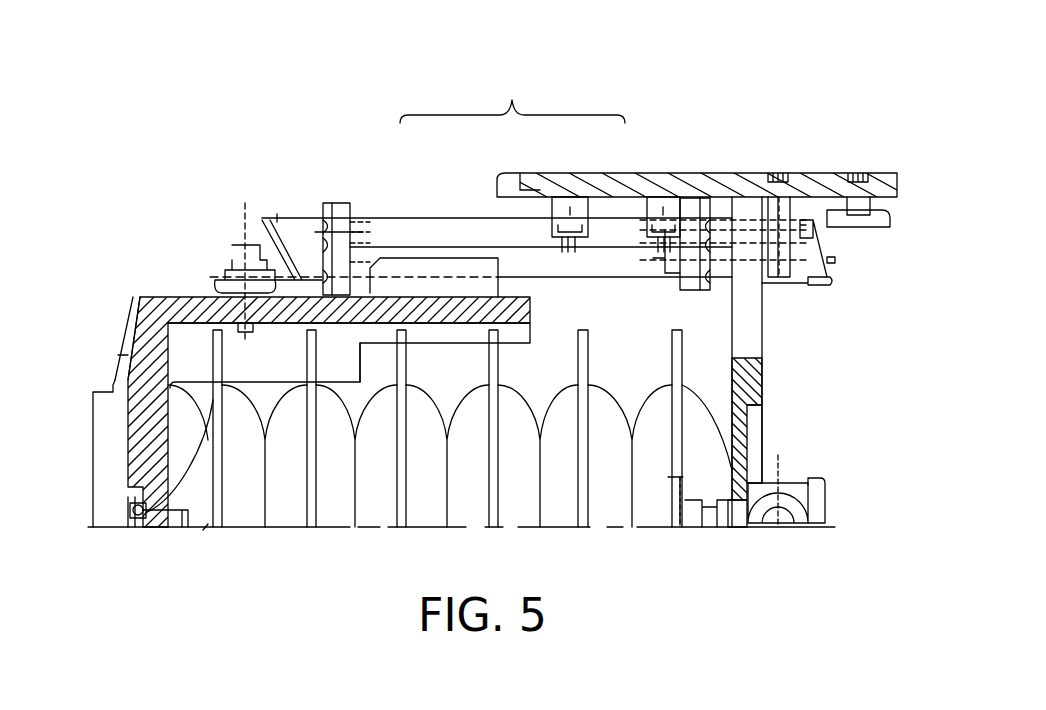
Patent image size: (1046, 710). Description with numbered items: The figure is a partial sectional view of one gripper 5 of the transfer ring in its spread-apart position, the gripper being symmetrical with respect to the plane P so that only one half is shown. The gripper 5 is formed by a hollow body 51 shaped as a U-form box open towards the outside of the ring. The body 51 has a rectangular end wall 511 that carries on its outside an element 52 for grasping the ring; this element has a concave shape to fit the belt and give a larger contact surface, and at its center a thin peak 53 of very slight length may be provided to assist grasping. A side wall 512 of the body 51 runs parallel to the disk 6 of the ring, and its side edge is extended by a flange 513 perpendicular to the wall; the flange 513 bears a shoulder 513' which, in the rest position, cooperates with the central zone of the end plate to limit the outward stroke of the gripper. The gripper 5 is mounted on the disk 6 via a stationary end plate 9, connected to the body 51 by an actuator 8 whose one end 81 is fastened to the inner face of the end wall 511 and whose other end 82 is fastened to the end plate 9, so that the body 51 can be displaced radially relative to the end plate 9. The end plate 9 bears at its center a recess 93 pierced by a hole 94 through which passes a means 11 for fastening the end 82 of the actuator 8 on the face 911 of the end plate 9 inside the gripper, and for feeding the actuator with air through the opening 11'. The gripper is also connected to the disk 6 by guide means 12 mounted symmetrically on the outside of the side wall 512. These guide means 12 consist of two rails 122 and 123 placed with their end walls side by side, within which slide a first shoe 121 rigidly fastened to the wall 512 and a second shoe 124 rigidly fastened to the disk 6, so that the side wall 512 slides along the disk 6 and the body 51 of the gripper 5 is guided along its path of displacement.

The gripper 5 is at (138, 283).
The hollow body 51 is at (168, 296).
The rectangular end wall 511 is at (140, 333).
The side wall 512 is at (183, 283).
The flange 513 is at (385, 339).
The shoulder 513' is at (416, 362).
The grasping element 52 is at (103, 473).
The thin peak 53 is at (128, 524).
The actuator end 81 is at (197, 483).
The actuator 8 is at (589, 349).
The actuator end 82 is at (707, 447).
The stationary end plate 9 is at (765, 318).
The face of the end plate 911 is at (733, 372).
The recess 93 is at (757, 425).
The hole 94 is at (737, 522).
The fastening means 11 is at (847, 495).
The opening 11' is at (788, 480).
The disk 6 is at (718, 178).
The guide means 12 is at (516, 90).
The first shoe 121 is at (400, 272).
The rail 122 is at (505, 258).
The rail 123 is at (523, 232).
The second shoe 124 is at (610, 210).
The plane of symmetry P is at (200, 532).